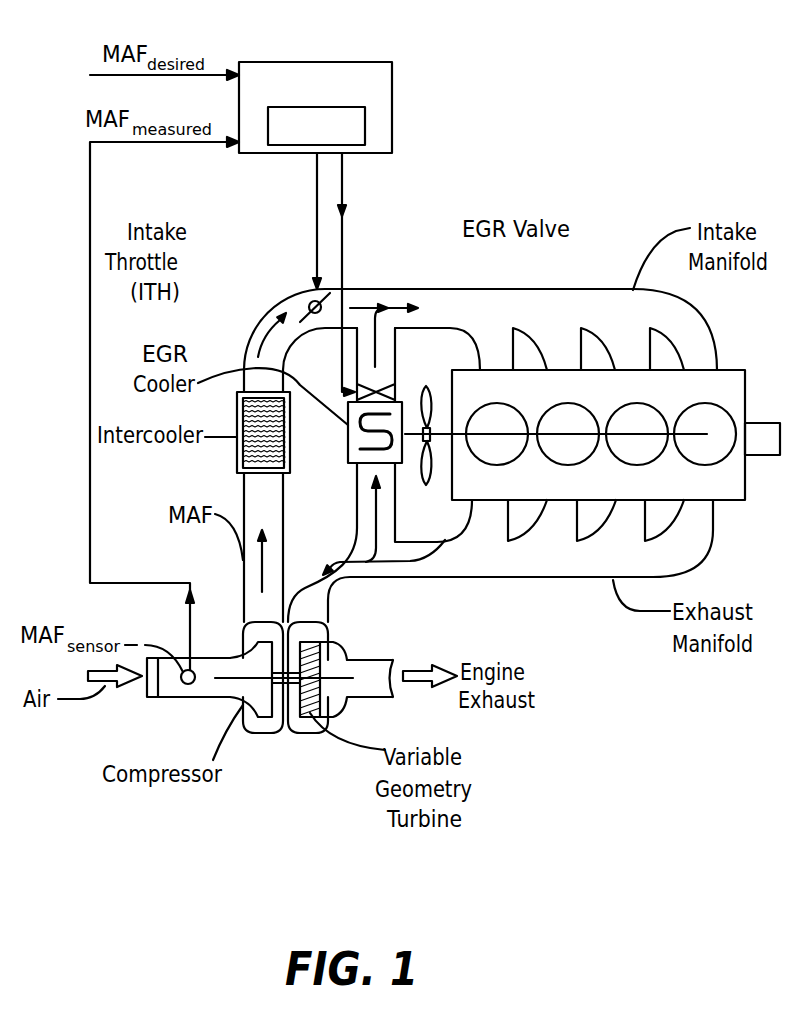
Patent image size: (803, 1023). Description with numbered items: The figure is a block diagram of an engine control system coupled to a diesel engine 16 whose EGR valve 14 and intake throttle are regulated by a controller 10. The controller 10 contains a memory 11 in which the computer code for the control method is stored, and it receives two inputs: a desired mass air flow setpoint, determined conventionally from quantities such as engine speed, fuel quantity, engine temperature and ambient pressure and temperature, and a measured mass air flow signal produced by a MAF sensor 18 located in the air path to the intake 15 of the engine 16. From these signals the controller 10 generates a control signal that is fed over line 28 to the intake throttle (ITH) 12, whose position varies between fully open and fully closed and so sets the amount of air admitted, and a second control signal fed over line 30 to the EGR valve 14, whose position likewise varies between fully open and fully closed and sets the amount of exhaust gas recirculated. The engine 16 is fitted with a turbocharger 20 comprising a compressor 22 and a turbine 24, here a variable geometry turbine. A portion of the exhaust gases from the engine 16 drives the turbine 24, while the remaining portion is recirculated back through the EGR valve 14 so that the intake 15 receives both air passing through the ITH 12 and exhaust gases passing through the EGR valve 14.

The controller 10 is at (393, 78).
The memory 11 is at (365, 125).
The line 28 is at (315, 185).
The line 30 is at (347, 183).
The intake throttle (ITH) 12 is at (300, 318).
The intake 15 is at (450, 298).
The EGR valve 14 is at (402, 390).
The engine 16 is at (737, 368).
The compressor 22 is at (243, 660).
The turbine 24 is at (338, 665).
The MAF sensor 18 is at (187, 686).
The turbocharger 20 is at (302, 760).